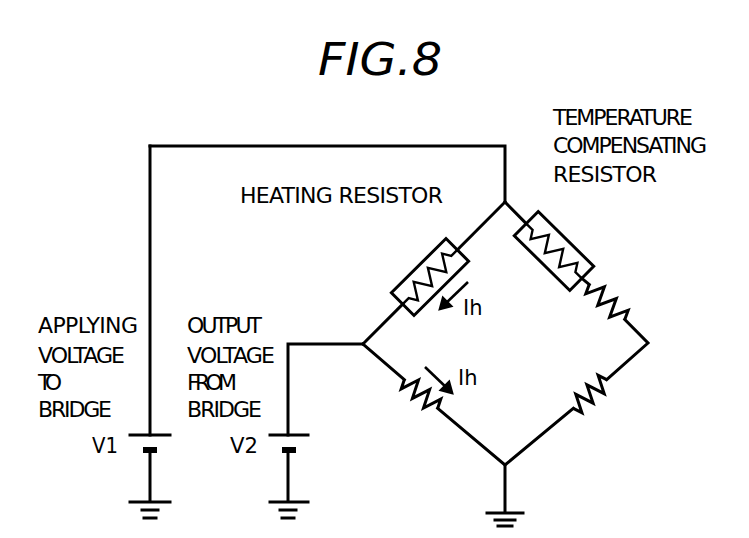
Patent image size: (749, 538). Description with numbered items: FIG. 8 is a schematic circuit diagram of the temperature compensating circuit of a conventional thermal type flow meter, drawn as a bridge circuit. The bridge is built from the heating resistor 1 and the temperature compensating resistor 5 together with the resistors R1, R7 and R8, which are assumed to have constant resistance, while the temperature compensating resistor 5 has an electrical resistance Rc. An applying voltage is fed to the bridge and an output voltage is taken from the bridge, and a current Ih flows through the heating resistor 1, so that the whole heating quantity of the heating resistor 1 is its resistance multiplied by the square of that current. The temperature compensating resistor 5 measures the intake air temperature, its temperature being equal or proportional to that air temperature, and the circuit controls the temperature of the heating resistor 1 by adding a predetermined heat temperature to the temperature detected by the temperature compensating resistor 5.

The heating resistor 1 is at (394, 291).
The temperature compensating resistor 5 is at (589, 264).
The resistor R1 is at (423, 402).
The resistor R7 is at (597, 405).
The resistor R8 is at (621, 299).